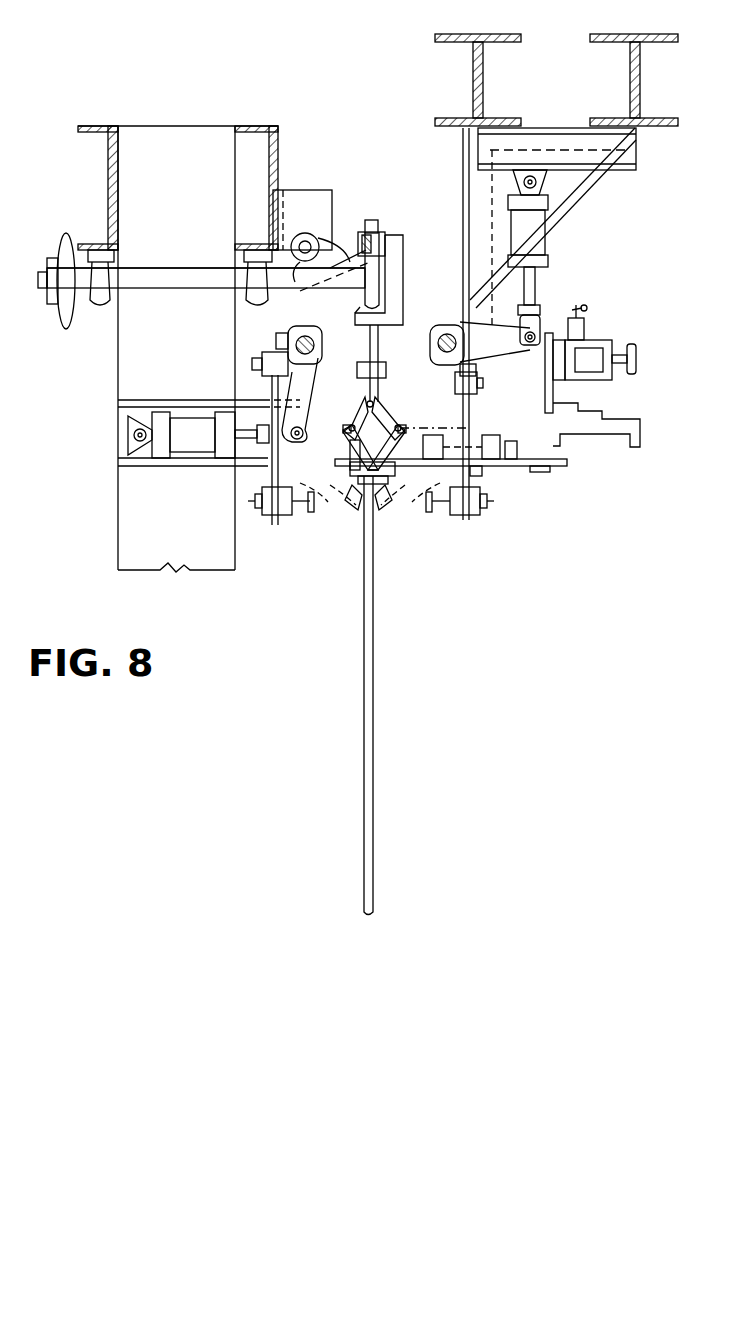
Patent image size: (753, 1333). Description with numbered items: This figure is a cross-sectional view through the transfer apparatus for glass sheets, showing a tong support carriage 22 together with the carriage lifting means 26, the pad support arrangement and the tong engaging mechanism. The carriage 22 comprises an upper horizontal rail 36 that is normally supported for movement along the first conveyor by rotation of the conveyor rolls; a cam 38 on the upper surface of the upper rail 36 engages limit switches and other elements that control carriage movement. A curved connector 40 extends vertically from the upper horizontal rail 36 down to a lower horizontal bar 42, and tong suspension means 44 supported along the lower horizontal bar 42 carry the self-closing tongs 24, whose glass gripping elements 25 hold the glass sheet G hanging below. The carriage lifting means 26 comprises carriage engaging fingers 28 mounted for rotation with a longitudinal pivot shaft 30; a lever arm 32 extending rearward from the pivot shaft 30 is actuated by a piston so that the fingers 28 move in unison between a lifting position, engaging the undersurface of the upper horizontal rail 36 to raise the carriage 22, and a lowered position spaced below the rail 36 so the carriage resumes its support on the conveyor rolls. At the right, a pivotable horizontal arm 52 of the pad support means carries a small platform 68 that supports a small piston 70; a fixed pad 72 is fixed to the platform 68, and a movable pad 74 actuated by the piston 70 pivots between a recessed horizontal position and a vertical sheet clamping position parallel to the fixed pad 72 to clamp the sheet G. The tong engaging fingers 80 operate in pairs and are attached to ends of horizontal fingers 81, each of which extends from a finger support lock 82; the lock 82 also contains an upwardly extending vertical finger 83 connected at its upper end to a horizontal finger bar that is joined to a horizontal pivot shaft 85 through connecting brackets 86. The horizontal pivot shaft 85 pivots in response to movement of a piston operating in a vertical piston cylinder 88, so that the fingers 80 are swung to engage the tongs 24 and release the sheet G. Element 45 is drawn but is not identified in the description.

The tong support carriage 22 is at (418, 250).
The self-closing tongs 24 is at (409, 413).
The glass gripping elements 25 is at (352, 488).
The carriage lifting means 26 is at (345, 292).
The carriage engaging fingers 28 is at (370, 220).
The longitudinal pivot shaft 30 is at (300, 235).
The lever arm 32 is at (143, 284).
The upper horizontal rail 36 is at (384, 236).
The cam 38 is at (385, 240).
The curved connector 40 is at (403, 285).
The lower horizontal bar 42 is at (316, 330).
The tong suspension means 44 is at (380, 338).
The collar 45 is at (357, 370).
The pivotable horizontal arm 52 is at (598, 342).
The small platform 68 is at (510, 468).
The small piston 70 is at (483, 445).
The fixed pad 72 is at (385, 520).
The movable pad 74 is at (362, 520).
The tong engaging fingers 80 is at (310, 518).
The horizontal finger 81 is at (272, 482).
The finger support lock 82 is at (455, 382).
The vertical finger 83 is at (470, 410).
The horizontal pivot shaft 85 is at (446, 335).
The connecting brackets 86 is at (455, 376).
The vertical piston cylinder 88 is at (192, 450).
The glass sheet G is at (364, 686).